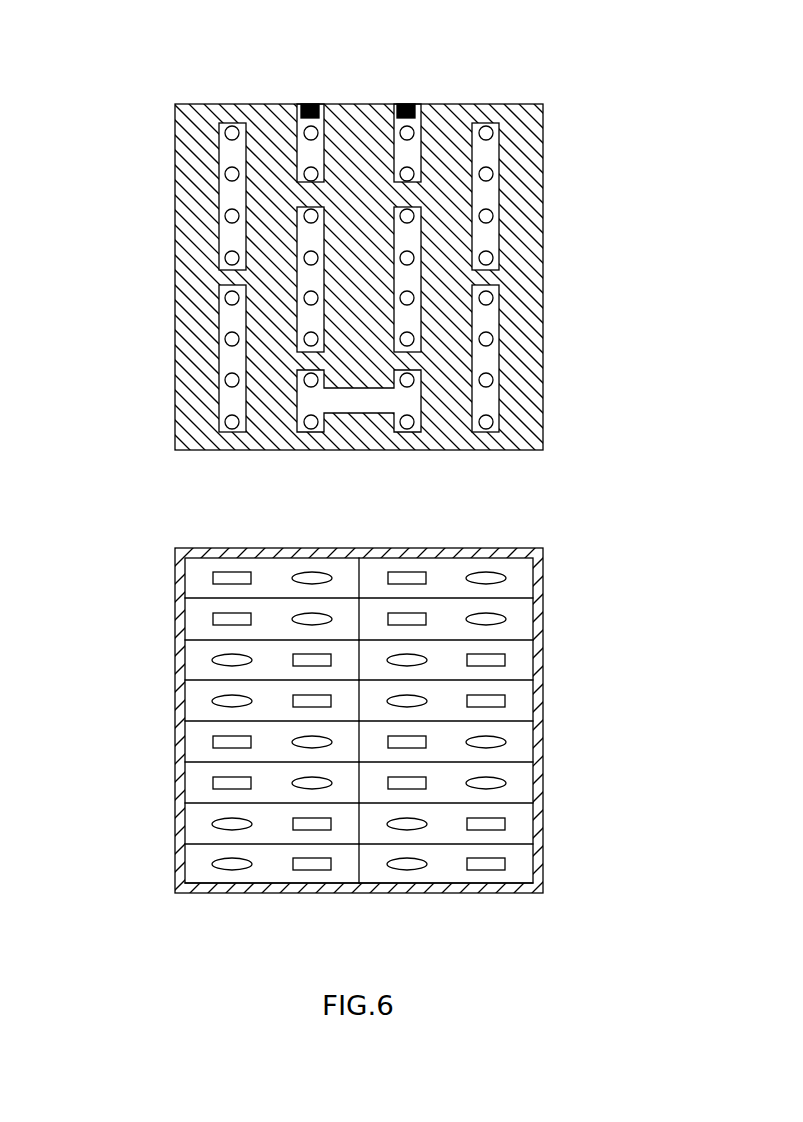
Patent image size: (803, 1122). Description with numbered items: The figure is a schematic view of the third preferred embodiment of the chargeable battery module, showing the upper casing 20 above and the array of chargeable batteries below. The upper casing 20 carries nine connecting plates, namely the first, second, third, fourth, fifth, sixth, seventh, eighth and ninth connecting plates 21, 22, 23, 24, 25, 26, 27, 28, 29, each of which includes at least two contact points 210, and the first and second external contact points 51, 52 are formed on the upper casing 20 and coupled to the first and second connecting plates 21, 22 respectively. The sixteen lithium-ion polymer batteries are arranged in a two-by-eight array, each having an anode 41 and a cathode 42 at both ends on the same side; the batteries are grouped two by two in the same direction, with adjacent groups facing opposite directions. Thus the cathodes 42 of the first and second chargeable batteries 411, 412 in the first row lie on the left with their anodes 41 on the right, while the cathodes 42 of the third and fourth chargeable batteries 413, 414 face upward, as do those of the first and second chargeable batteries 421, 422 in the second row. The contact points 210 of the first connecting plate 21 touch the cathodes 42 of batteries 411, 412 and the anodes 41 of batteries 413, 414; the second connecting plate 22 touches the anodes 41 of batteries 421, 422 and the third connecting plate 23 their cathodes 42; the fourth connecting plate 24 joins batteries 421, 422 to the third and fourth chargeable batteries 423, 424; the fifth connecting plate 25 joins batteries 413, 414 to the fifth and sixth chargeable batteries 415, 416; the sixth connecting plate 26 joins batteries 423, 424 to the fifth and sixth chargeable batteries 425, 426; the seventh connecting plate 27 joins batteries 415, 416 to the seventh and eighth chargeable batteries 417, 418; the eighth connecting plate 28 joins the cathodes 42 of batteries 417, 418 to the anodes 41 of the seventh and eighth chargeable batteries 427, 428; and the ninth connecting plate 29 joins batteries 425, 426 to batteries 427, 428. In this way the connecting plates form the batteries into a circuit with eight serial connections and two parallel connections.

The upper casing 20 is at (520, 262).
The first connecting plate 21 is at (223, 145).
The second connecting plate 22 is at (298, 105).
The third connecting plate 23 is at (419, 118).
The fourth connecting plate 24 is at (493, 160).
The fifth connecting plate 25 is at (300, 276).
The sixth connecting plate 26 is at (412, 277).
The seventh connecting plate 27 is at (228, 320).
The eighth connecting plate 28 is at (365, 402).
The ninth connecting plate 29 is at (490, 360).
The contact point 210 is at (226, 126).
The first external contact point 51 is at (310, 104).
The second external contact point 52 is at (405, 117).
The anode 41 is at (318, 621).
The cathode 42 is at (243, 619).
The first chargeable battery in the first row 411 is at (208, 573).
The second chargeable battery in the first row 412 is at (195, 612).
The third chargeable battery in the first row 413 is at (195, 645).
The fourth chargeable battery in the first row 414 is at (197, 698).
The fifth chargeable battery in the first row 415 is at (195, 742).
The sixth chargeable battery in the first row 416 is at (192, 782).
The seventh chargeable battery in the first row 417 is at (197, 826).
The eighth chargeable battery in the first row 418 is at (208, 878).
The first chargeable battery in the second row 421 is at (520, 566).
The second chargeable battery in the second row 422 is at (515, 610).
The third chargeable battery in the second row 423 is at (523, 668).
The fourth chargeable battery in the second row 424 is at (518, 707).
The fifth chargeable battery in the second row 425 is at (520, 748).
The sixth chargeable battery in the second row 426 is at (525, 792).
The seventh chargeable battery in the second row 427 is at (520, 832).
The eighth chargeable battery in the second row 428 is at (497, 878).